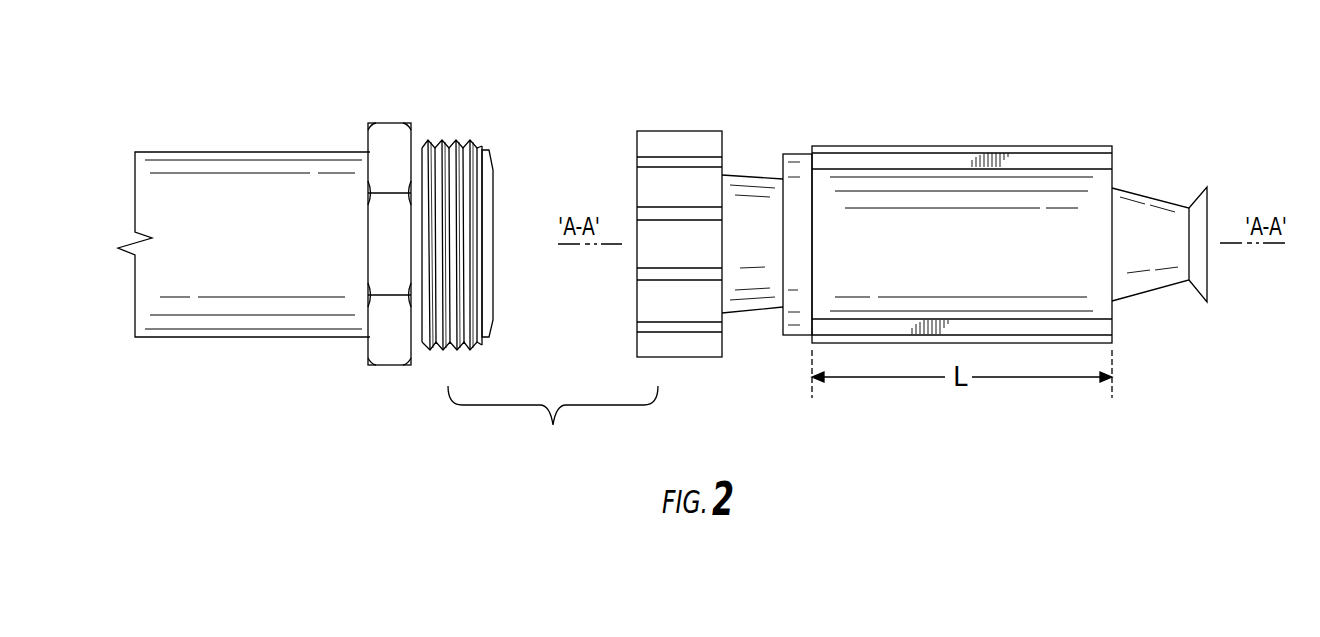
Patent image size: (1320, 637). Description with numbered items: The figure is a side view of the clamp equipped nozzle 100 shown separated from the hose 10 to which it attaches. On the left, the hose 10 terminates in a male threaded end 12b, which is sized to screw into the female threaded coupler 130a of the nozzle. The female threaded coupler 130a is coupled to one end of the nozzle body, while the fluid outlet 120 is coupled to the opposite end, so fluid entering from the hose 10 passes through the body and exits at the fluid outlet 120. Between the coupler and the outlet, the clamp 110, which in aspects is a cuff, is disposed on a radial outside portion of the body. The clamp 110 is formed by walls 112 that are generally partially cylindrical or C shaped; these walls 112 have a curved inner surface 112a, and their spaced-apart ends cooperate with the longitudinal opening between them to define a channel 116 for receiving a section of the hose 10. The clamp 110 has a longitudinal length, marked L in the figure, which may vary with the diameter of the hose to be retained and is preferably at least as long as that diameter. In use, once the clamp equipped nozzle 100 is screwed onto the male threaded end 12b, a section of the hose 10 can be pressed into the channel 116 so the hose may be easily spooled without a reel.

The hose 10 is at (244, 368).
The male threaded end 12b is at (467, 140).
The clamp equipped nozzle 100 is at (853, 64).
The clamp 110 is at (1113, 328).
The walls 112 is at (962, 185).
The curved inner surface 112a is at (938, 198).
The channel 116 is at (812, 262).
The fluid outlet 120 is at (1200, 192).
The female threaded coupler 130a is at (677, 130).